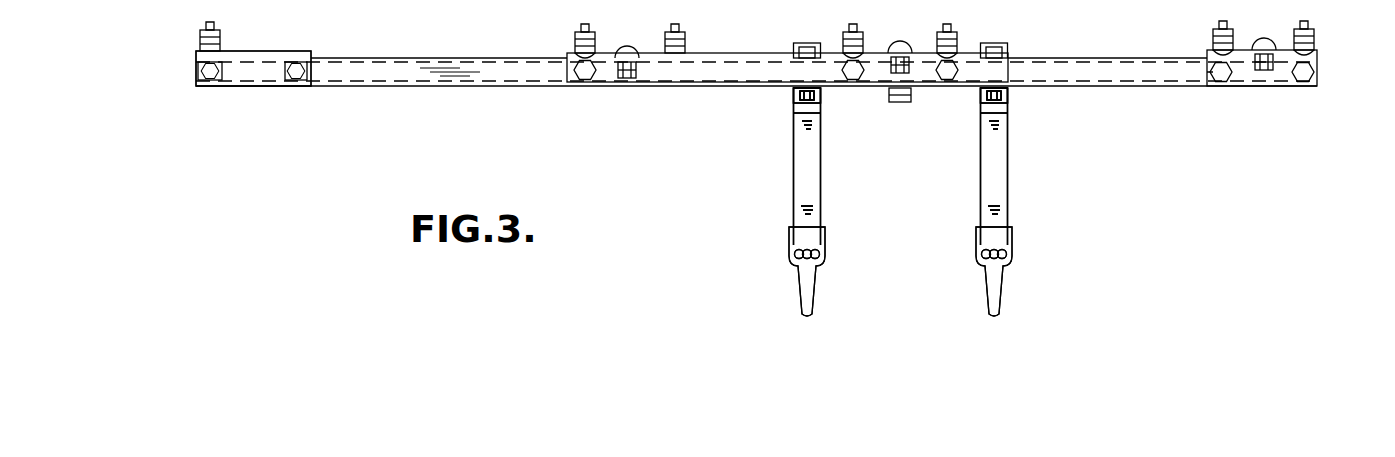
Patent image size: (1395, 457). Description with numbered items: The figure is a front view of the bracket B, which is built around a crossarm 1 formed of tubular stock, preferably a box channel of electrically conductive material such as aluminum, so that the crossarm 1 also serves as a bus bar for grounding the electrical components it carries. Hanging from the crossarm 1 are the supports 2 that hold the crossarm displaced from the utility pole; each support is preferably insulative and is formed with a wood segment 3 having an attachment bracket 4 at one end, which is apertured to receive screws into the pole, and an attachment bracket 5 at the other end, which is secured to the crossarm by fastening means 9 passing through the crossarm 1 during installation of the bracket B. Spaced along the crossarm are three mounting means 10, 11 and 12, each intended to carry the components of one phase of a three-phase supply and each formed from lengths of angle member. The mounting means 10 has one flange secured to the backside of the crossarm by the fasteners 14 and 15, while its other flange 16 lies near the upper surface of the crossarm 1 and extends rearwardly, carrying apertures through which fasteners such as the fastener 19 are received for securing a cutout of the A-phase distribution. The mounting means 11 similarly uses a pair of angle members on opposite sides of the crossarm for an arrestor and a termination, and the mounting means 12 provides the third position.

The crossarm 1 is at (1088, 58).
The supports 2 is at (962, 194).
The wood segment 3 is at (800, 165).
The attachment bracket 4 is at (800, 282).
The attachment bracket 5 is at (793, 103).
The fastening means 9 is at (820, 93).
The mounting means 10 is at (236, 45).
The mounting means 11 is at (694, 31).
The mounting means 12 is at (1274, 25).
The fastener 14 is at (198, 86).
The fastener 15 is at (300, 80).
The flange 16 is at (279, 51).
The fastener 19 is at (200, 40).
The bracket B is at (712, 146).